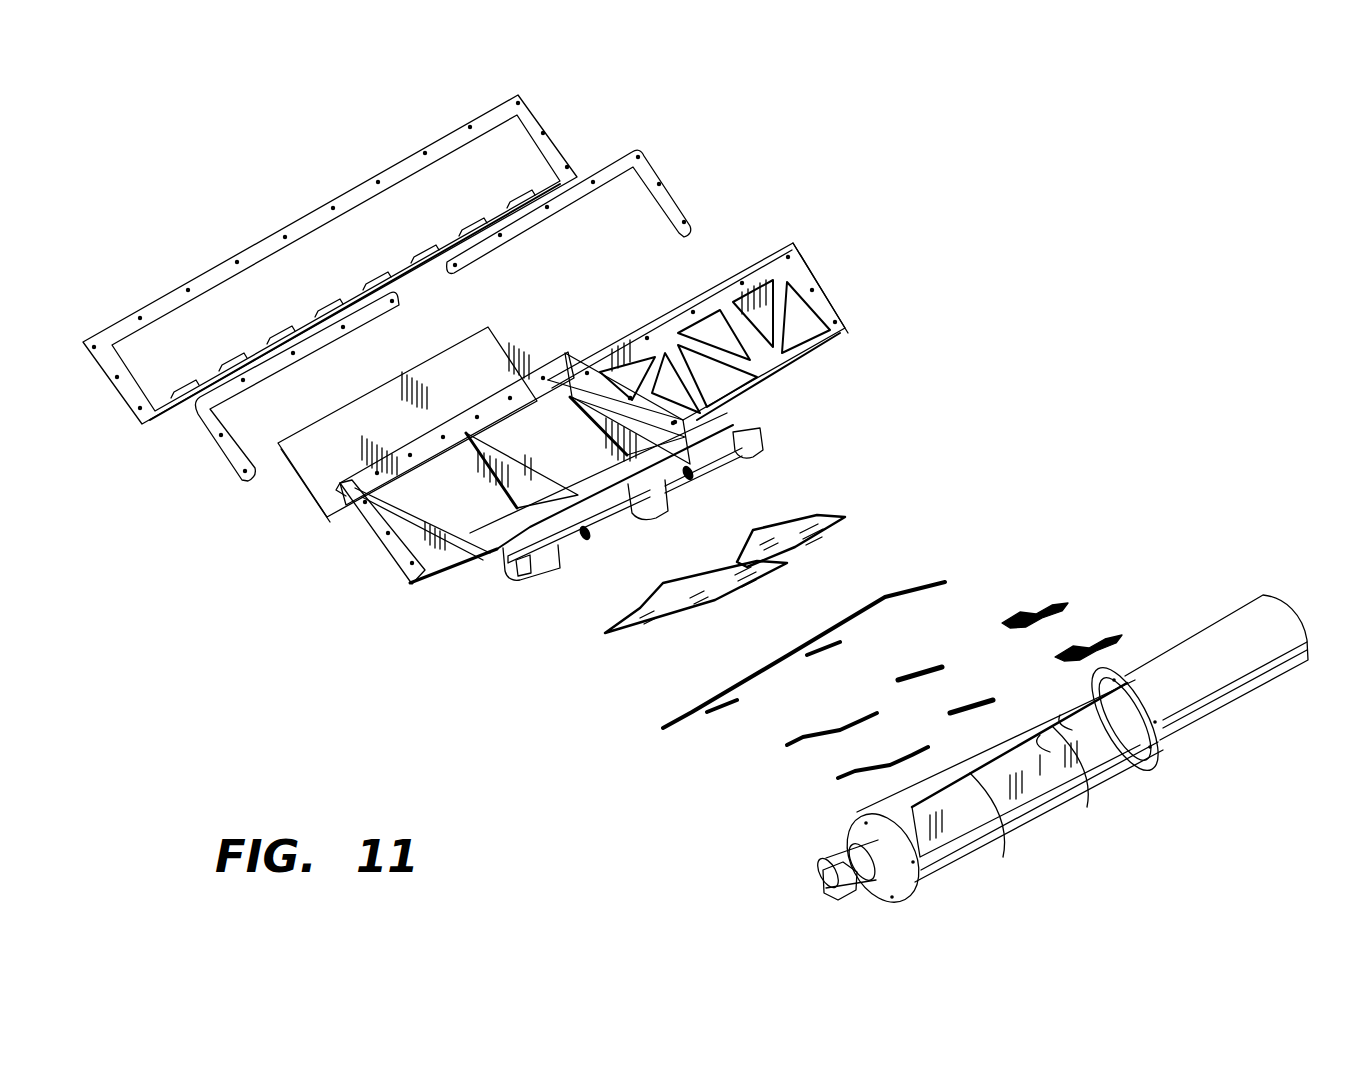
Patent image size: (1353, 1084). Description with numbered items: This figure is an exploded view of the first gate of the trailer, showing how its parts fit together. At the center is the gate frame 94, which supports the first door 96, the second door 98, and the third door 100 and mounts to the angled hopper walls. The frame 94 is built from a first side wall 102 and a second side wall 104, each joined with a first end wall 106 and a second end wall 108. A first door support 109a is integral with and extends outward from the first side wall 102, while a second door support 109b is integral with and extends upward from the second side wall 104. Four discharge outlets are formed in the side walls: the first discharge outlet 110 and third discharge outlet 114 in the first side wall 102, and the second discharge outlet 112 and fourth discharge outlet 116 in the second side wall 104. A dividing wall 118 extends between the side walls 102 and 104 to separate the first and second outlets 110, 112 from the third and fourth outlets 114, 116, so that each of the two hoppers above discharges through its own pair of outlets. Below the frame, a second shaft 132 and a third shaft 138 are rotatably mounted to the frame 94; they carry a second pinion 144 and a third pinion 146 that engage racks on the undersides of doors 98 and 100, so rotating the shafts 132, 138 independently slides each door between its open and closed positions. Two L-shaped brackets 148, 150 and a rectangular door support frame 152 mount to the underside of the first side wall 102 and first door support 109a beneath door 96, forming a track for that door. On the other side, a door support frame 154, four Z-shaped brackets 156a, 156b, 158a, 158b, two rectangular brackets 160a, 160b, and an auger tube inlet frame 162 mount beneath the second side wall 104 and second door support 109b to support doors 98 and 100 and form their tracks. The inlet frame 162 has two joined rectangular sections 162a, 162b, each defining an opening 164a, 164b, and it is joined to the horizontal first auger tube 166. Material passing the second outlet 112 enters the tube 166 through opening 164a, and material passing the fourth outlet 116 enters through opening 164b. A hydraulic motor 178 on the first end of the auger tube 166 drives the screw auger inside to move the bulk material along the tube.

The frame 94 is at (772, 270).
The first door 96 is at (465, 347).
The second door 98 is at (690, 600).
The third door 100 is at (768, 532).
The first side wall 102 is at (523, 387).
The second side wall 104 is at (493, 557).
The first end wall 106 is at (428, 557).
The second end wall 108 is at (597, 393).
The first door support 109a is at (795, 273).
The second door support 109b is at (745, 427).
The first discharge outlet 110 is at (382, 520).
The second discharge outlet 112 is at (450, 573).
The third discharge outlet 114 is at (547, 365).
The fourth discharge outlet 116 is at (697, 420).
The dividing wall 118 is at (537, 484).
The second shaft 132 is at (573, 543).
The third shaft 138 is at (717, 462).
The second pinion 144 is at (588, 540).
The third pinion 146 is at (692, 478).
The L-shaped bracket 148 is at (237, 457).
The L-shaped bracket 150 is at (652, 180).
The rectangular door support frame 152 is at (270, 243).
The door support frame 154 is at (913, 583).
The Z-shaped bracket 156a is at (807, 730).
The Z-shaped bracket 156b is at (857, 767).
The Z-shaped bracket 158a is at (1033, 604).
The Z-shaped bracket 158b is at (1088, 636).
The rectangular bracket 160a is at (917, 667).
The rectangular bracket 160b is at (960, 693).
The auger tube inlet frame 162 is at (1100, 673).
The rectangular section 162a is at (895, 795).
The rectangular section 162b is at (1023, 723).
The opening 164a is at (990, 827).
The opening 164b is at (1077, 783).
The first auger tube 166 is at (1047, 810).
The hydraulic motor 178 is at (823, 872).